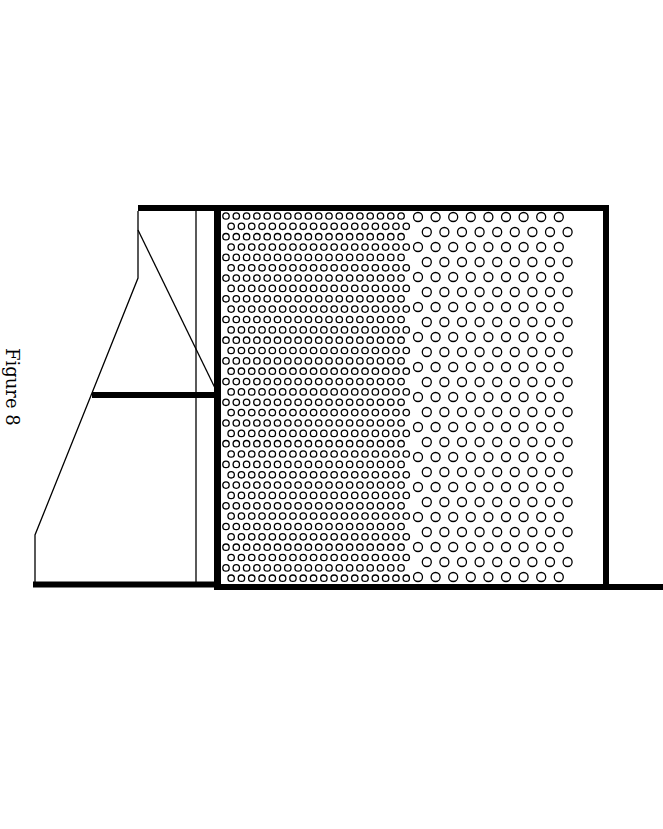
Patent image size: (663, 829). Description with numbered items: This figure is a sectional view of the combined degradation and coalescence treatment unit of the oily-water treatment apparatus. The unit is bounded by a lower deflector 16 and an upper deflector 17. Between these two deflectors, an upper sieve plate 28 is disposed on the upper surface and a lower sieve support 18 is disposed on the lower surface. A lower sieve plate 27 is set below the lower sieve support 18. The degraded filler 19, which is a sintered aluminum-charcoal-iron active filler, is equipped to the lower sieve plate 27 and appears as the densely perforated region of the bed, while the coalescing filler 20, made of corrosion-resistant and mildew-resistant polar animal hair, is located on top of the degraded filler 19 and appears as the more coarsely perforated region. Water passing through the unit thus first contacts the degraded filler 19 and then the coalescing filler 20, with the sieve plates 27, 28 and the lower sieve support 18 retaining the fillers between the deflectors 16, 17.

The lower deflector 16 is at (287, 588).
The upper deflector 17 is at (262, 207).
The lower sieve support 18 is at (215, 388).
The degraded filler 19 is at (343, 218).
The coalescing filler 20 is at (500, 213).
The lower sieve plate 27 is at (217, 542).
The upper sieve plate 28 is at (606, 577).